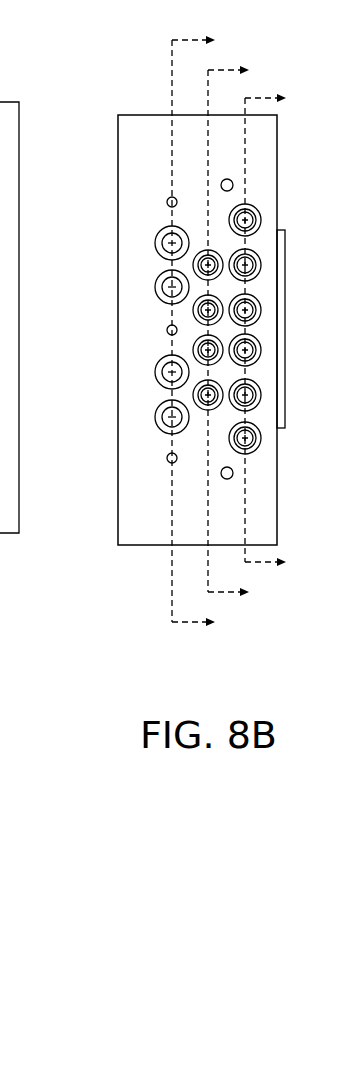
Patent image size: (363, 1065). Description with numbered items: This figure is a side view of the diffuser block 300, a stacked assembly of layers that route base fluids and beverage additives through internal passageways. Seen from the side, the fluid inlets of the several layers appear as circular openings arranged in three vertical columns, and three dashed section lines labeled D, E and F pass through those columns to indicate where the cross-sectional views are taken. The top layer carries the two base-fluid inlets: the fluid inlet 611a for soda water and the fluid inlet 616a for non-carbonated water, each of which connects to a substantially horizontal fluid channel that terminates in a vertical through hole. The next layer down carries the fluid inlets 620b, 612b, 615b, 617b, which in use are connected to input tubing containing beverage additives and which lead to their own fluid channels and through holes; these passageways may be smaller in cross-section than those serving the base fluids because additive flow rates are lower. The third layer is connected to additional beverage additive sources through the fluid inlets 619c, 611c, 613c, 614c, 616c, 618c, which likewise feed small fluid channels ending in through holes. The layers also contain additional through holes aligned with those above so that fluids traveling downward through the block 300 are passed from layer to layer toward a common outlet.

The diffuser block 300 is at (133, 603).
The fluid inlet for soda water 611a is at (164, 240).
The fluid inlet for non-carbonated water 616a is at (162, 421).
The fluid inlet 620b is at (200, 267).
The fluid inlet 612b is at (200, 313).
The fluid inlet 615b is at (200, 353).
The fluid inlet 617b is at (200, 397).
The fluid inlet 619c is at (250, 223).
The fluid inlet 611c is at (250, 267).
The fluid inlet 613c is at (250, 312).
The fluid inlet 614c is at (250, 352).
The fluid inlet 616c is at (250, 397).
The fluid inlet 618c is at (250, 440).